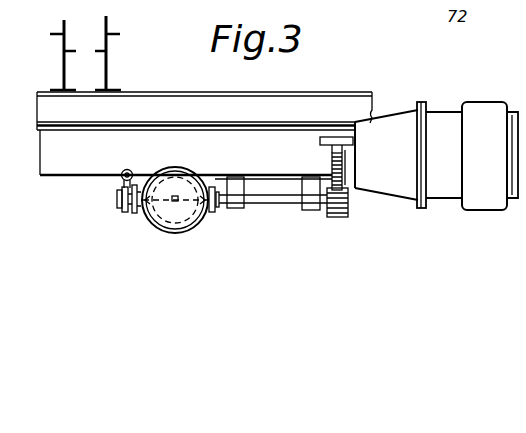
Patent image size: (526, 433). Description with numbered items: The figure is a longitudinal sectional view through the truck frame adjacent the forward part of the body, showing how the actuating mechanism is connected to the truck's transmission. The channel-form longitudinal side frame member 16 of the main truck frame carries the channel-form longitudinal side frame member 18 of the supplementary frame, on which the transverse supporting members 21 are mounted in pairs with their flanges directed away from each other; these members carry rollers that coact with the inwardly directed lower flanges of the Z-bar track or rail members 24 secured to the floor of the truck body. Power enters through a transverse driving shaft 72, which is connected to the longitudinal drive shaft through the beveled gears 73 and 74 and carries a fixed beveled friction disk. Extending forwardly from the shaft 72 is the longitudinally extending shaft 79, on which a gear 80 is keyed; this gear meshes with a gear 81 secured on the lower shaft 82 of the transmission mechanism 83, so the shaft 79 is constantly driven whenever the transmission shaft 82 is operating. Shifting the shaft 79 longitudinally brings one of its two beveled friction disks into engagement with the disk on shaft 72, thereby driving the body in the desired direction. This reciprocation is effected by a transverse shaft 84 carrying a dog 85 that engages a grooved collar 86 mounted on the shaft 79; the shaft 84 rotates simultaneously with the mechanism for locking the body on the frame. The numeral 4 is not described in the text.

The frame 4 is at (325, 6).
The longitudinal side frame member 16 is at (62, 160).
The longitudinal side frame member of supplementary frame 18 is at (204, 111).
The transverse supporting member 21 is at (62, 66).
The track or rail member 24 is at (62, 22).
The transverse driving shaft 72 is at (174, 206).
The beveled gear 73 is at (400, 0).
The beveled gear 74 is at (422, 0).
The longitudinally extending shaft 79 is at (260, 206).
The gear 80 is at (338, 218).
The gear 81 is at (331, 160).
The lower shaft of transmission mechanism 82 is at (348, 179).
The transmission mechanism 83 is at (443, 187).
The shaft 84 is at (124, 170).
The dog 85 is at (120, 190).
The grooved collar 86 is at (127, 212).